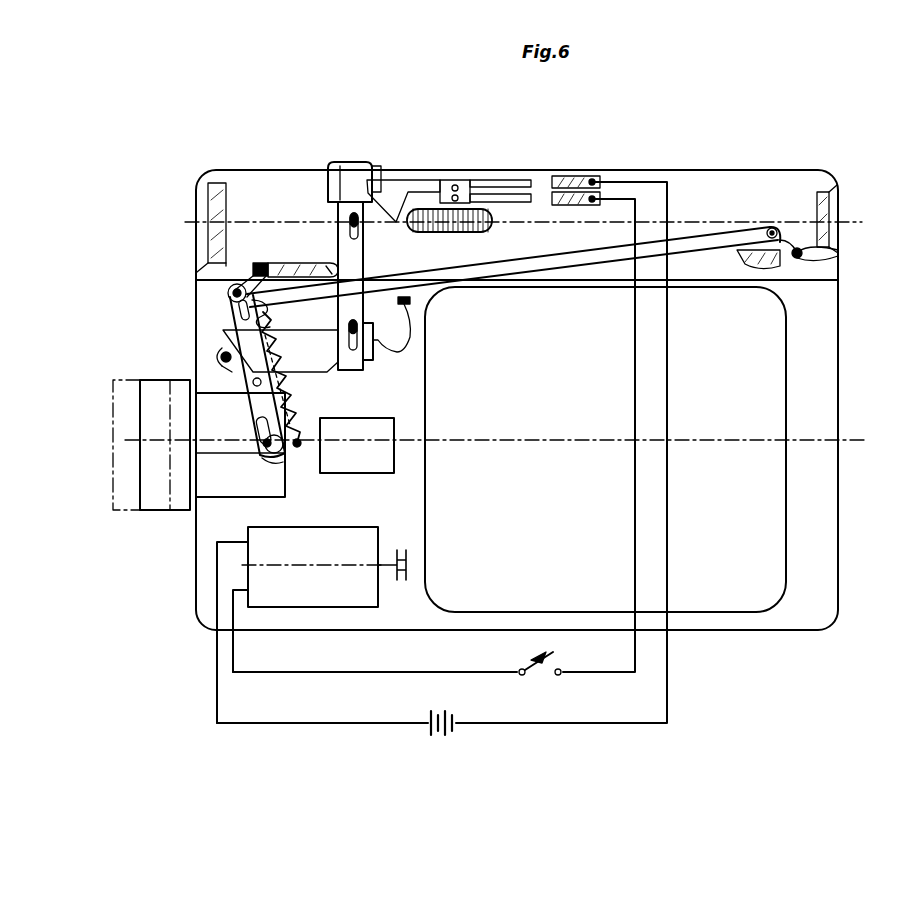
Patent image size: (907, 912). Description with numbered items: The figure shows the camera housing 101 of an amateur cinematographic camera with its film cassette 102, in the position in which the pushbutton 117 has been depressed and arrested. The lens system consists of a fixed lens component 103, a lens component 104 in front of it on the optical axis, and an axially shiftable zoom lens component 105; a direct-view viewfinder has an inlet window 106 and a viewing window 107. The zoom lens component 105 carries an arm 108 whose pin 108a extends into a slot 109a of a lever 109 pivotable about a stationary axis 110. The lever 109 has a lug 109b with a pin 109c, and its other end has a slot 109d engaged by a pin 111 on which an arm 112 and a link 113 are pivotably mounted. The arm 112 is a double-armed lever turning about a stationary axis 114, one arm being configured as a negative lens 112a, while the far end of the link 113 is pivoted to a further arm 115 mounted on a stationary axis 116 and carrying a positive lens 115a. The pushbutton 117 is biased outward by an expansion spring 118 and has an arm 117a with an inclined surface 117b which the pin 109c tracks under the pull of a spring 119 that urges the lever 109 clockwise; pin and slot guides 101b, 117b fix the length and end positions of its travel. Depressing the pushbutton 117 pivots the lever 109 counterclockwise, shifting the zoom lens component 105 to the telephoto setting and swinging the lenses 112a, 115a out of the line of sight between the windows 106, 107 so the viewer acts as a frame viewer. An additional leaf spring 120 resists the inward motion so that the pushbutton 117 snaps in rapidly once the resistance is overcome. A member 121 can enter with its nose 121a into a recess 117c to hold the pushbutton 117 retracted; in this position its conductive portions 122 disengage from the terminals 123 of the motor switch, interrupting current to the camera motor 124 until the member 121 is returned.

The camera housing 101 is at (840, 480).
The pins of pin and slot guides 101b is at (350, 217).
The film cassette 102 is at (787, 497).
The fixed lens component 103 is at (397, 467).
The lens component 104 is at (280, 467).
The zoom lens component 105 is at (142, 478).
The inlet window 106 is at (220, 183).
The viewing window 107 is at (822, 180).
The arm 108 is at (212, 455).
The pin 108a is at (267, 453).
The lever 109 is at (258, 412).
The slot 109a is at (300, 447).
The lug 109b is at (222, 366).
The pin or projection 109c is at (218, 356).
The slot 109d is at (240, 308).
The stationary axis 110 is at (252, 383).
The pin 111 is at (232, 290).
The arm 112 is at (256, 263).
The negative lens 112a is at (327, 263).
The link 113 is at (600, 262).
The stationary axis 114 is at (285, 250).
The further arm 115 is at (833, 247).
The positive lens 115a is at (775, 262).
The stationary axis 116 is at (823, 262).
The pushbutton 117 is at (340, 163).
The arm 117a is at (360, 363).
The inclined surface 117b is at (360, 236).
The recess 117c is at (377, 165).
The expansion spring 118 is at (333, 332).
The spring 119 is at (287, 345).
The additional spring 120 is at (420, 338).
The member 121 is at (470, 233).
The nose 121a is at (380, 183).
The conductive portions 122 is at (527, 183).
The terminals 123 is at (588, 200).
The camera motor 124 is at (333, 595).